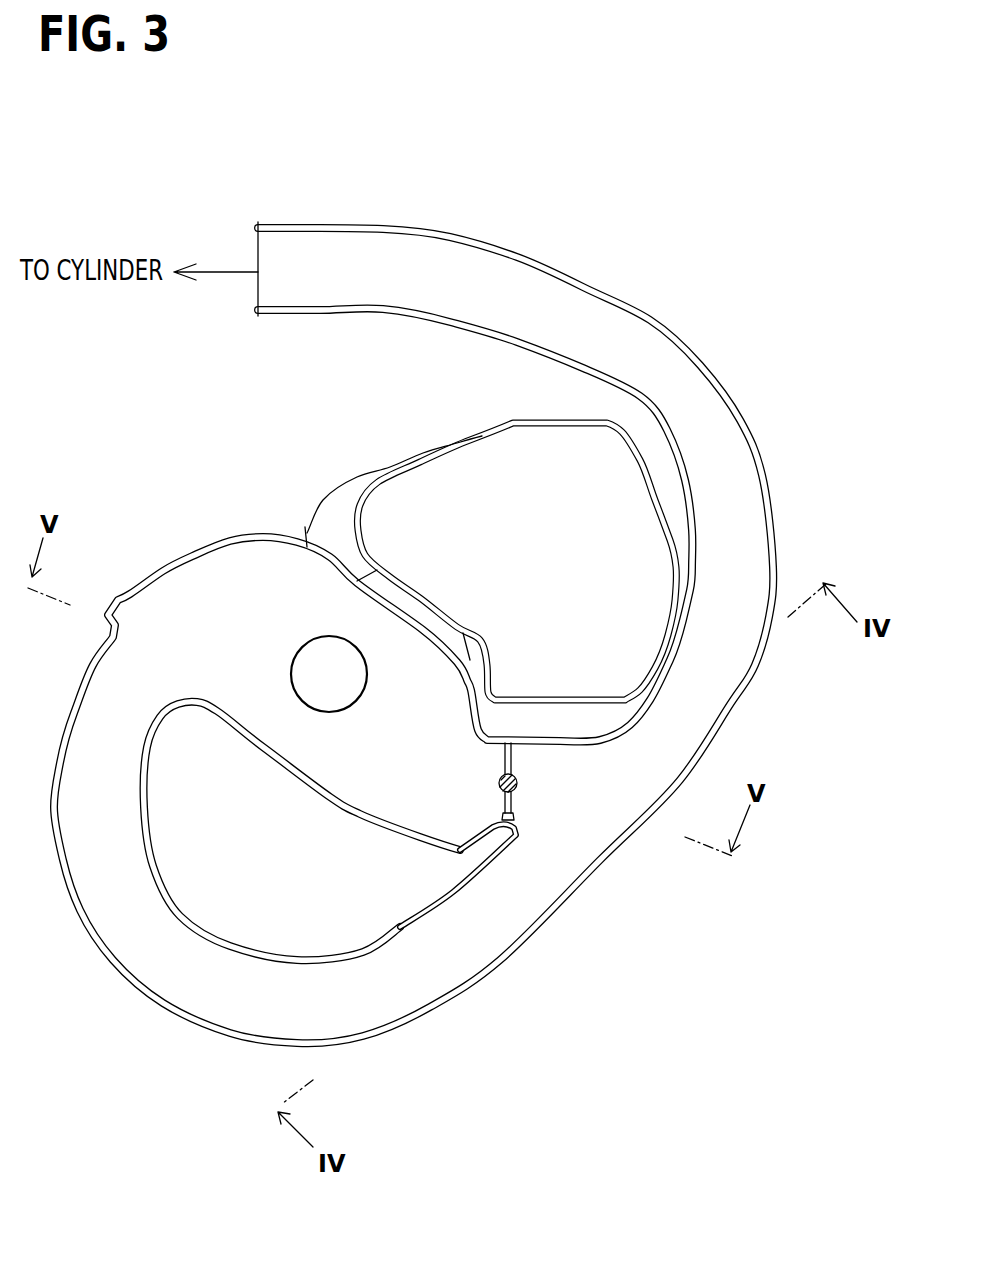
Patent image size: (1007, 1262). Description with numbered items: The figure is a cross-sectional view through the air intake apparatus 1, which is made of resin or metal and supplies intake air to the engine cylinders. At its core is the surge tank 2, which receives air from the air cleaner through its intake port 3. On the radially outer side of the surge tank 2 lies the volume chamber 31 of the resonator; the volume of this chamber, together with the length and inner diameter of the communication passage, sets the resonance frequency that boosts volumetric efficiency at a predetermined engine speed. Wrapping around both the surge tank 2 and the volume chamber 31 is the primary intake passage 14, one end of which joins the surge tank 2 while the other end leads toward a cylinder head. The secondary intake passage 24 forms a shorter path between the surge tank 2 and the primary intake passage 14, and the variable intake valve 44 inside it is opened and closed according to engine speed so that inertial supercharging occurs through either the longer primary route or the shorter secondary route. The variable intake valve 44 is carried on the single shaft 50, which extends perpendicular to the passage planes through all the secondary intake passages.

The air intake apparatus 1 is at (225, 166).
The surge tank 2 is at (240, 607).
The intake port 3 is at (320, 708).
The primary intake passage 14 is at (157, 958).
The secondary intake passage 24 is at (527, 762).
The volume chamber 31 is at (457, 493).
The variable intake valve 44 is at (516, 807).
The shaft 50 is at (497, 780).